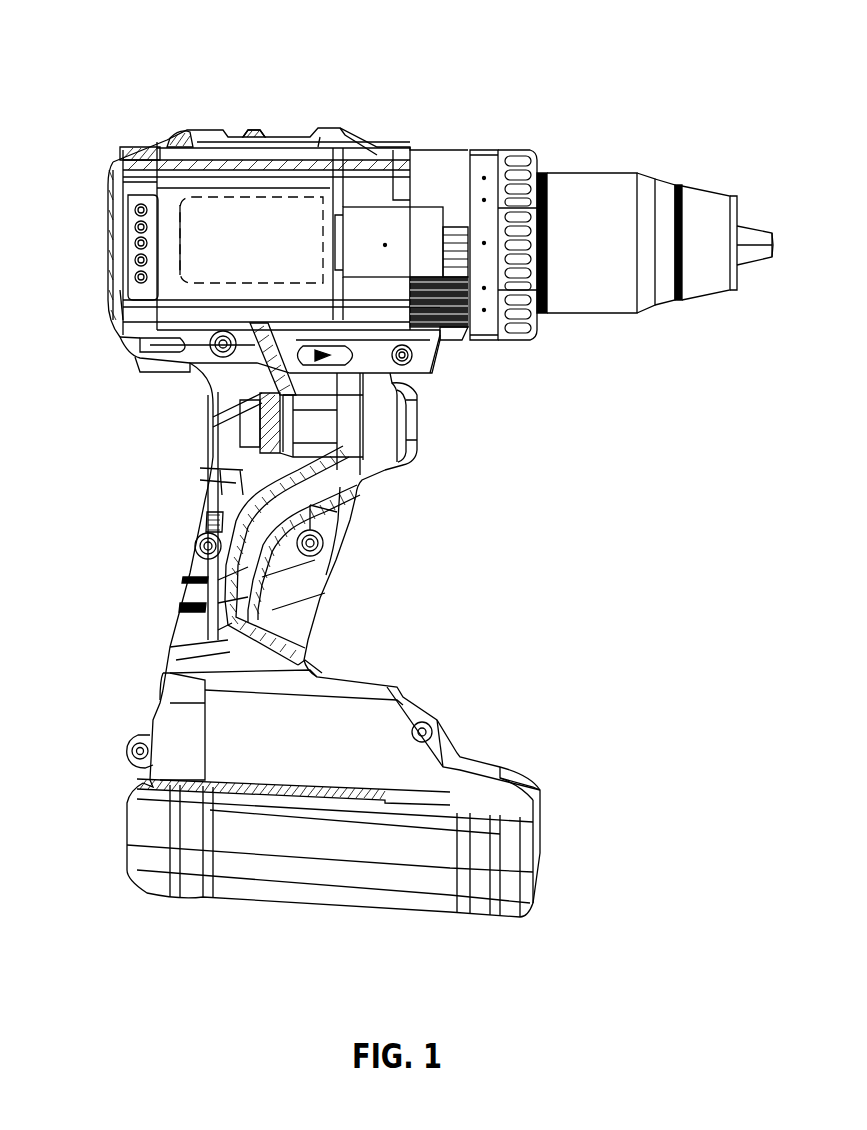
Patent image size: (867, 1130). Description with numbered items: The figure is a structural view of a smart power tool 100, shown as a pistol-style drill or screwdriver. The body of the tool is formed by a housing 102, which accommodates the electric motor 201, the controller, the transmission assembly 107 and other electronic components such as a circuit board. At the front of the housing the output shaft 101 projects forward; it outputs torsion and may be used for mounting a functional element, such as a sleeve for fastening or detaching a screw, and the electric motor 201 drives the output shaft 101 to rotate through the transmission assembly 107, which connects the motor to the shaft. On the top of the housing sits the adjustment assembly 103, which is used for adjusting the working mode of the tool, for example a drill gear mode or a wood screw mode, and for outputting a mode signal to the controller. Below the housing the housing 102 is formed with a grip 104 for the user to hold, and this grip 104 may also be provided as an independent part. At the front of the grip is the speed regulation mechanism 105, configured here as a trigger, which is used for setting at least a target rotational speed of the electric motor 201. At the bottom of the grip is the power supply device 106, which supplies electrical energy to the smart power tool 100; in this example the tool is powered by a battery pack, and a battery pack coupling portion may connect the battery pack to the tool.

The smart power tool 100 is at (328, 110).
The output shaft 101 is at (750, 222).
The housing 102 is at (109, 236).
The adjustment assembly 103 is at (256, 127).
The grip 104 is at (312, 563).
The speed regulation mechanism 105 is at (408, 427).
The power supply device 106 is at (296, 898).
The transmission assembly 107 is at (430, 200).
The electric motor 201 is at (207, 165).